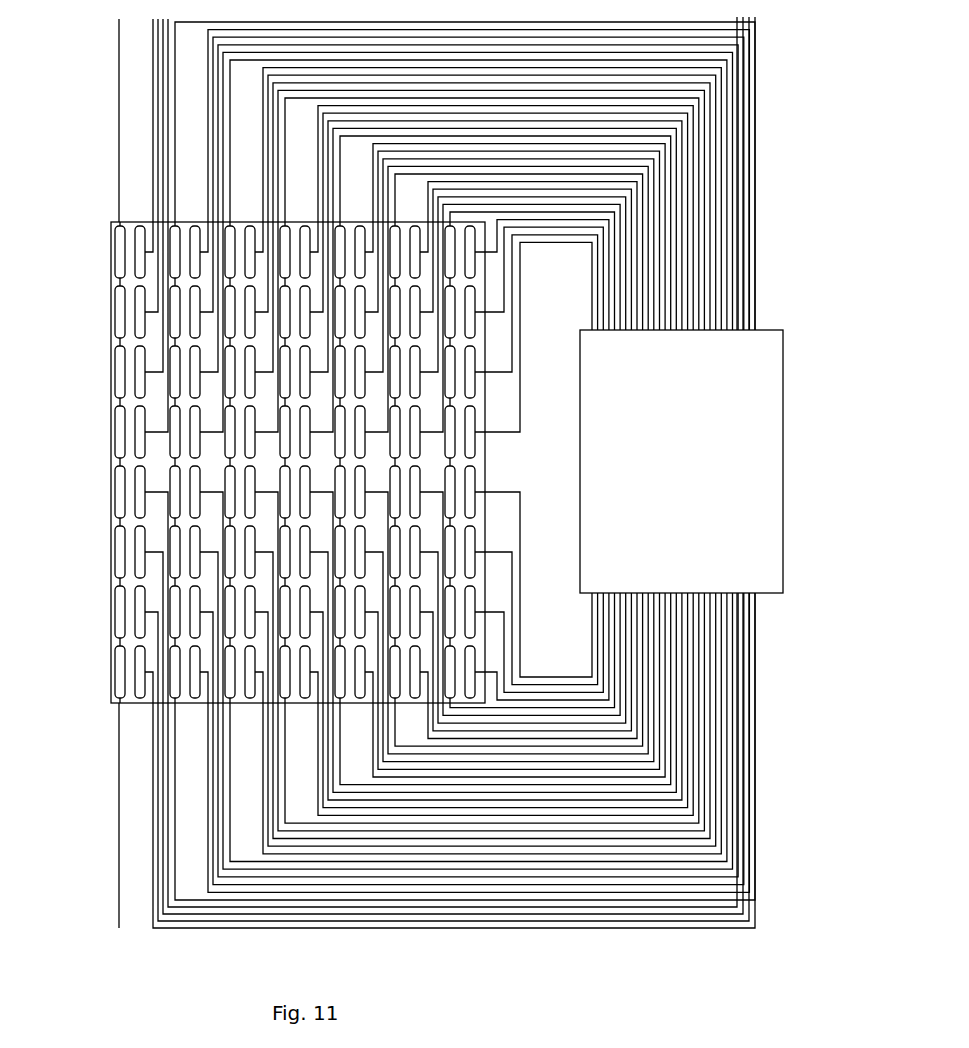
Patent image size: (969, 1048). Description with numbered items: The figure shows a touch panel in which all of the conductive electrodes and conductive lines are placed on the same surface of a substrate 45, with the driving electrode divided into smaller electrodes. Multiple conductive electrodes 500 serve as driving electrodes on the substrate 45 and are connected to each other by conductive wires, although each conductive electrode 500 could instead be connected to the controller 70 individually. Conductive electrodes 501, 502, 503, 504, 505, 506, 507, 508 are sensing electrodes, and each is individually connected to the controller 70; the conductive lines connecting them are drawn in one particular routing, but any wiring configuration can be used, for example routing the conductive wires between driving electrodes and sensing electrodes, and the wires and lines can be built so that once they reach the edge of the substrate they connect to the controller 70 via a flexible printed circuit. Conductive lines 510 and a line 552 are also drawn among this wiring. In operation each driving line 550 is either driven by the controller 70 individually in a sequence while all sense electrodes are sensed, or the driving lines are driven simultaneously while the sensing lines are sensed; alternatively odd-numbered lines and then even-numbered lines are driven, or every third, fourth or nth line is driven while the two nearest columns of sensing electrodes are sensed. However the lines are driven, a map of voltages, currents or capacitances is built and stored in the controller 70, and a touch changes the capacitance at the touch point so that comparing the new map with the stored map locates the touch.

The substrate 45 is at (111, 222).
The controller 70 is at (765, 492).
The conductive electrodes 500 is at (267, 477).
The conductive electrode 501 is at (140, 267).
The conductive electrode 502 is at (140, 327).
The conductive electrode 503 is at (140, 387).
The conductive electrode 504 is at (140, 447).
The conductive electrode 505 is at (140, 507).
The conductive electrode 506 is at (140, 567).
The conductive electrode 507 is at (140, 627).
The conductive electrode 508 is at (122, 705).
The connection lines 510 is at (156, 170).
The driving line 550 is at (118, 150).
The second connection line 552 is at (118, 795).